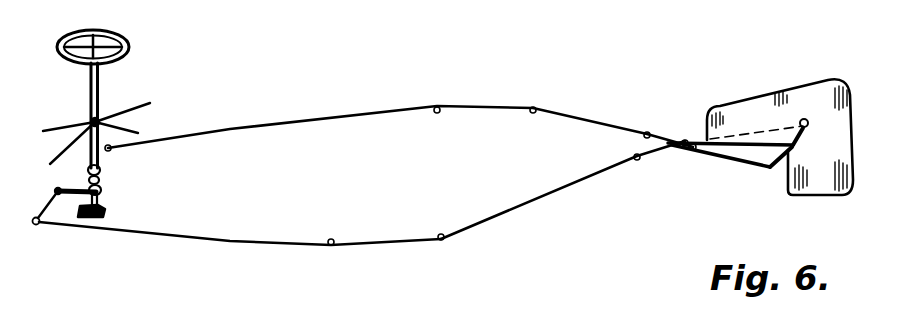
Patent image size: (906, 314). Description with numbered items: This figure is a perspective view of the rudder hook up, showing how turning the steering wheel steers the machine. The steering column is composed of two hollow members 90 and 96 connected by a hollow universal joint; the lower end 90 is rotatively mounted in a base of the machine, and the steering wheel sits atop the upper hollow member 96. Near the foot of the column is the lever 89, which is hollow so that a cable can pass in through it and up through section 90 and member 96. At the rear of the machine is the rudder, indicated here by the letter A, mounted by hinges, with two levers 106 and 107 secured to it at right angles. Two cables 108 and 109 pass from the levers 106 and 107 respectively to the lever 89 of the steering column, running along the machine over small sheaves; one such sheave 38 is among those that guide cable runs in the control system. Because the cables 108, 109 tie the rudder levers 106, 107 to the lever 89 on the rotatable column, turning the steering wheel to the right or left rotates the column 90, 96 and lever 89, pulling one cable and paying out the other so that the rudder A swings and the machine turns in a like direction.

The hollow member 96 is at (98, 82).
The hollow member 90 is at (107, 197).
The sheave 38 is at (105, 210).
The lever 89 is at (70, 197).
The cable 108 is at (538, 81).
The cable 109 is at (502, 216).
The lever 106 is at (780, 168).
The lever 107 is at (808, 133).
The body A is at (811, 93).